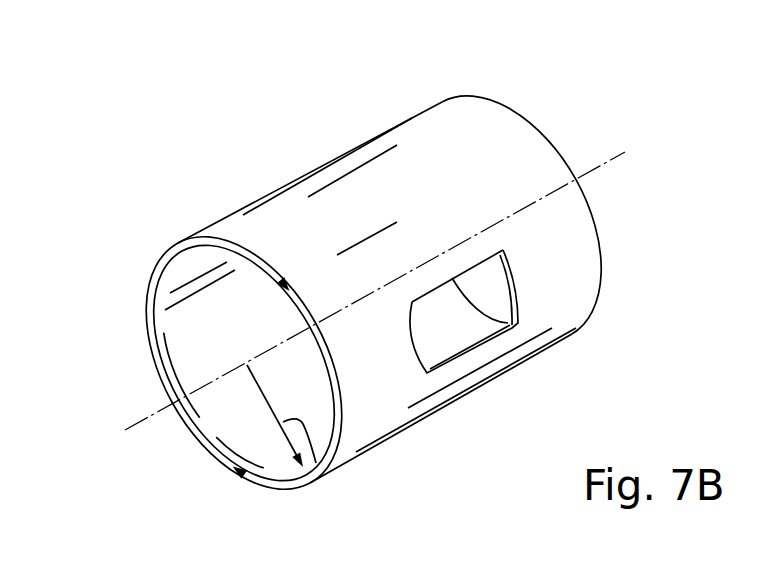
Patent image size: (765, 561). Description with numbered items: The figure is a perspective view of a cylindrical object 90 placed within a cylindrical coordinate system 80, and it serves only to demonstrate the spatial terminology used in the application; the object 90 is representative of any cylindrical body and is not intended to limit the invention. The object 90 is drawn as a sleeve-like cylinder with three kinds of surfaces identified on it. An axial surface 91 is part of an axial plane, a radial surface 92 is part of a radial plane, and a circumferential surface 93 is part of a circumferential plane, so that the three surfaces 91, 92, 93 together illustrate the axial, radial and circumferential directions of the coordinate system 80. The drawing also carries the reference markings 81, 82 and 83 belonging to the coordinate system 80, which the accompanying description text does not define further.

The cylindrical coordinate system 80 is at (547, 102).
The longitudinal axis 81 is at (135, 426).
The hook tab 82 is at (316, 465).
The front ring 83 is at (157, 265).
The cylindrical object 90 is at (407, 87).
The axial surface 91 is at (493, 328).
The radial surface 92 is at (258, 477).
The circumferential surface 93 is at (352, 190).